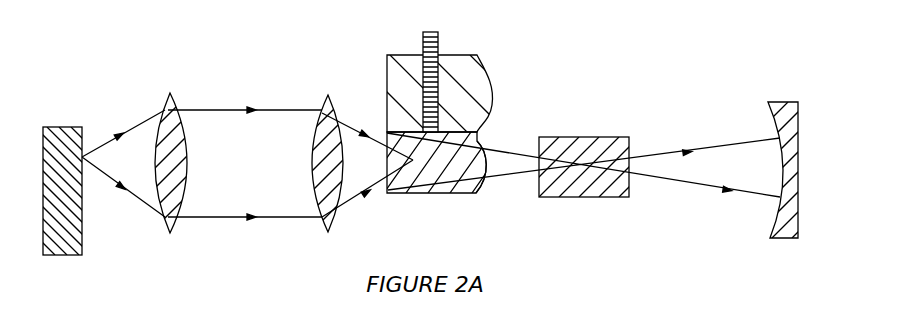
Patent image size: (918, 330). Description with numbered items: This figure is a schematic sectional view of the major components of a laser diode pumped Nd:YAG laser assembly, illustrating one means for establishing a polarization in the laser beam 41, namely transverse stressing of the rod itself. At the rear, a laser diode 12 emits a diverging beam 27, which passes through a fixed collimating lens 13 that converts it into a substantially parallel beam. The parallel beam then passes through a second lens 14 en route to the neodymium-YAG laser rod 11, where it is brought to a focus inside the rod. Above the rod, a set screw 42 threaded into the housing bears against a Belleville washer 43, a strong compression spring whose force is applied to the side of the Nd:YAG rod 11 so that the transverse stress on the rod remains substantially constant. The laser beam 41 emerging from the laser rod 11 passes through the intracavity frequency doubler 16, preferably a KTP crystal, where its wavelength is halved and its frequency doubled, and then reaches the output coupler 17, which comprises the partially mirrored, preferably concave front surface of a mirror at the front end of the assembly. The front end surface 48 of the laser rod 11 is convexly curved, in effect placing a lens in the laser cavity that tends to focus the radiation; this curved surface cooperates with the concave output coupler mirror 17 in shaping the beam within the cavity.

The neodymium-YAG laser rod 11 is at (434, 195).
The laser diode 12 is at (62, 127).
The collimating lens 13 is at (175, 103).
The lens 14 is at (330, 107).
The frequency doubler 16 is at (580, 137).
The output coupler 17 is at (785, 102).
The diverging beam 27 is at (113, 143).
The laser beam 41 is at (703, 186).
The set screw 42 is at (440, 46).
The Belleville washer 43 is at (485, 84).
The front end surface 48 is at (480, 190).